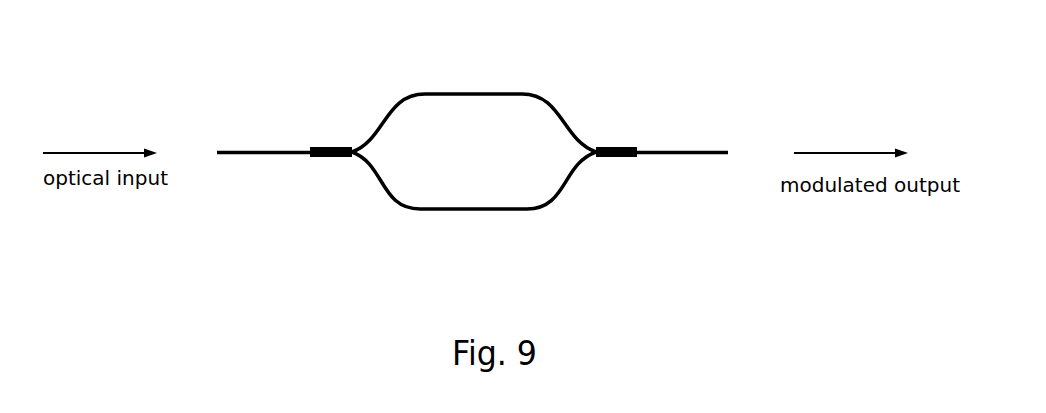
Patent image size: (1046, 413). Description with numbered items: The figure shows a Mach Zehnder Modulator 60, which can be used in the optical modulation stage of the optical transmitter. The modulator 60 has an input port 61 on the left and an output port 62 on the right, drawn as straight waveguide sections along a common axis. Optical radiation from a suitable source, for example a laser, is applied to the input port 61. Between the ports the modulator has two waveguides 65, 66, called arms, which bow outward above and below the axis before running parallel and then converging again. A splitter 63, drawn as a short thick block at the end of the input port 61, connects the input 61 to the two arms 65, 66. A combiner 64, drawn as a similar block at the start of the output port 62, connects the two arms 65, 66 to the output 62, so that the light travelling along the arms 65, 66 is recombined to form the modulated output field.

The Mach Zehnder Modulator 60 is at (313, 56).
The input port 61 is at (258, 153).
The output port 62 is at (685, 154).
The splitter 63 is at (325, 158).
The combiner 64 is at (612, 158).
The waveguide (first arm) 65 is at (468, 94).
The waveguide (second arm) 66 is at (472, 210).